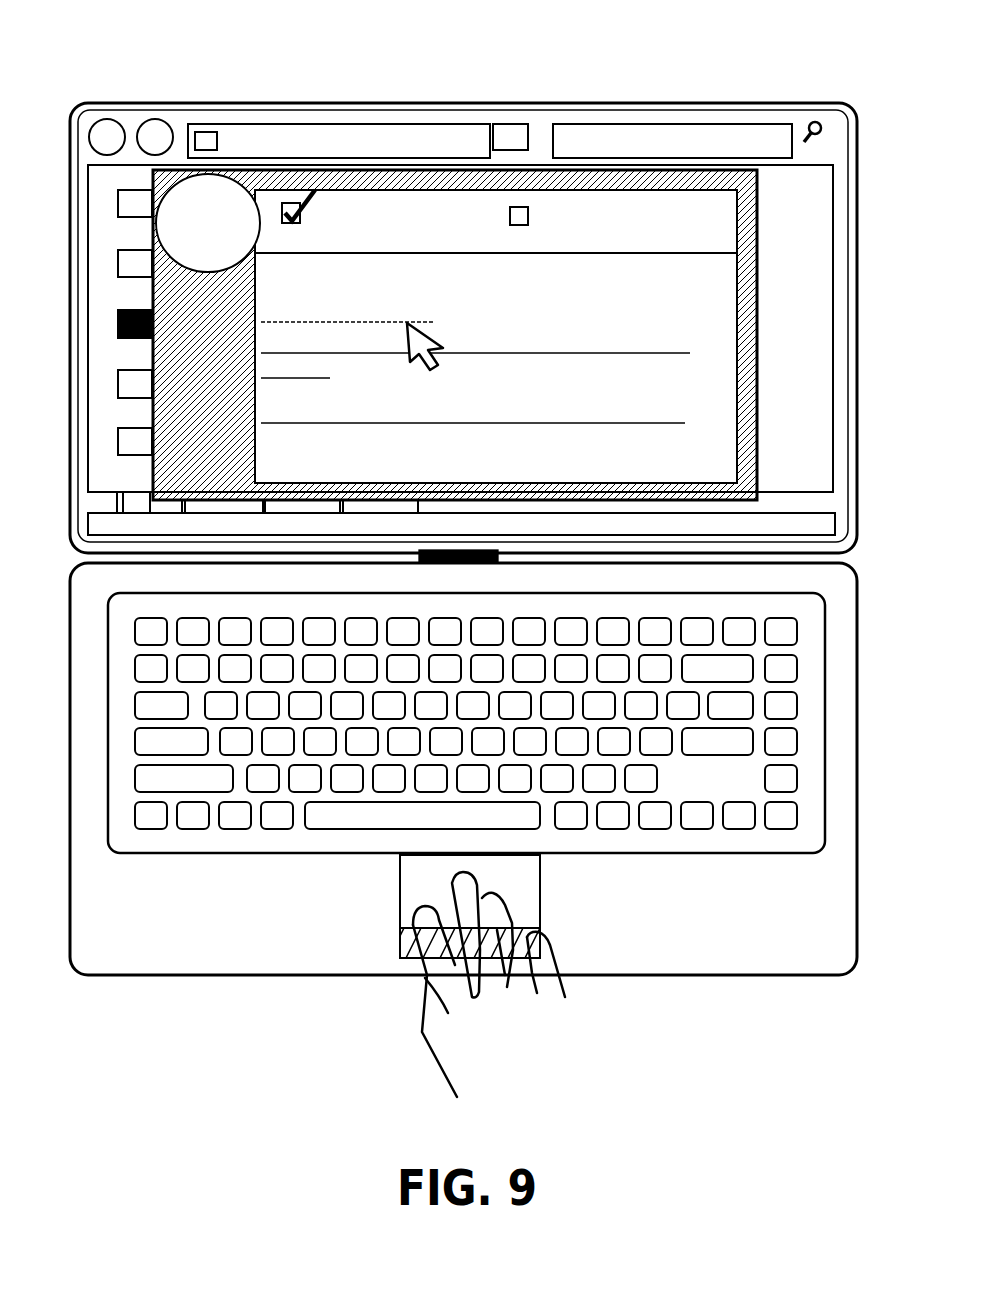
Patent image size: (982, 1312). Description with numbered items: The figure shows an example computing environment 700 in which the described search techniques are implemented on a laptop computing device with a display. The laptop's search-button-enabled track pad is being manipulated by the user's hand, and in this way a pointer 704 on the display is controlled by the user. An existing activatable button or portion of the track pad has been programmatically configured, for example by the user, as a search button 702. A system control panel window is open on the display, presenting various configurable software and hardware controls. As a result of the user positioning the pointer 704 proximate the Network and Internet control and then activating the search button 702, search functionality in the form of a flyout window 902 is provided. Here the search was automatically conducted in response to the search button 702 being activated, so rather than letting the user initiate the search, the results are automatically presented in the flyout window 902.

The computing environment 700 is at (333, 28).
The flyout window 902 is at (610, 187).
The pointer 704 is at (490, 369).
The search button 702 is at (403, 928).